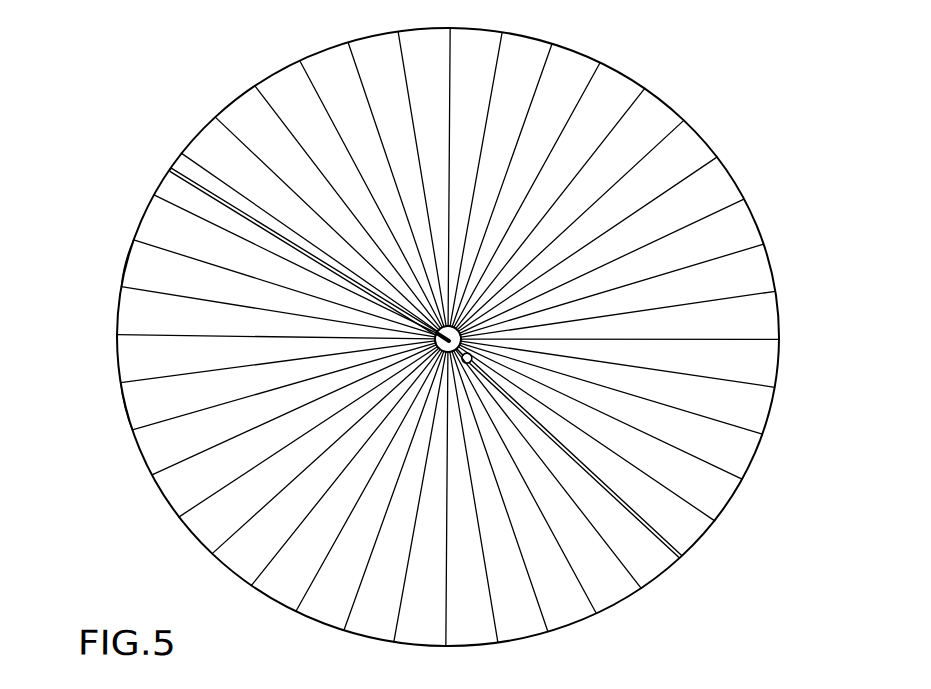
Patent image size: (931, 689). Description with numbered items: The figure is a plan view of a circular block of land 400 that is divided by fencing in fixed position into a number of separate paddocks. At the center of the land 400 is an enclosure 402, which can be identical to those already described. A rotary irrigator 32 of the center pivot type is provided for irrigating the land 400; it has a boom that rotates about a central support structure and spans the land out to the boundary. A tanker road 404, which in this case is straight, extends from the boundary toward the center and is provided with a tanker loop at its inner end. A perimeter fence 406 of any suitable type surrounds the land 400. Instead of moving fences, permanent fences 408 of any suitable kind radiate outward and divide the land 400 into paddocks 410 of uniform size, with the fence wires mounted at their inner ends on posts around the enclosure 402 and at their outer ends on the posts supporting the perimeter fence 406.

The circular block of land 400 is at (720, 116).
The enclosure 402 is at (126, 415).
The tanker road 404 is at (672, 541).
The perimeter fence 406 is at (124, 266).
The permanent fences 408 is at (703, 166).
The paddocks 410 is at (575, 57).
The rotary irrigator 32 is at (209, 178).